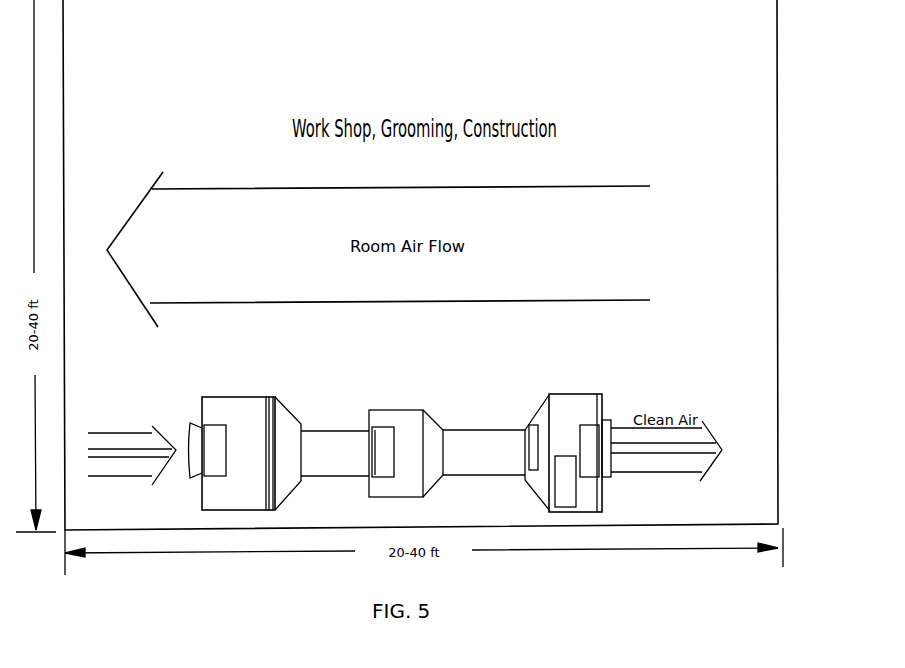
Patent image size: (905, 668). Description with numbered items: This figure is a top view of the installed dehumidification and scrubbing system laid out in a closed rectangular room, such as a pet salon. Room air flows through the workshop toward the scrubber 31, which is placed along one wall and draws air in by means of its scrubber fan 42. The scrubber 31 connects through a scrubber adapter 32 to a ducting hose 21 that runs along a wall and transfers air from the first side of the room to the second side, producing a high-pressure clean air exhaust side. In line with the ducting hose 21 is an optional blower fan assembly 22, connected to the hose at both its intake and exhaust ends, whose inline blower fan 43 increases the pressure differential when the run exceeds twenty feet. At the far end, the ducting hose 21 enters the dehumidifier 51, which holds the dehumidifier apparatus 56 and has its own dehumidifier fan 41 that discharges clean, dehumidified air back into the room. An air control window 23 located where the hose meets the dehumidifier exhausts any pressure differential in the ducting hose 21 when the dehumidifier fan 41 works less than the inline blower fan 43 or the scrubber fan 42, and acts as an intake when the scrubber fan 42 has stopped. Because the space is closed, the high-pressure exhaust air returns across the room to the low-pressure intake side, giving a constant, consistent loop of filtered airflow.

The ducting hose 21 is at (358, 436).
The blower fan assembly 22 is at (412, 418).
The air control window 23 is at (533, 437).
The scrubber 31 is at (247, 403).
The scrubber adapter 32 is at (283, 488).
The dehumidifier fan 41 is at (596, 400).
The scrubber fan 42 is at (215, 470).
The inline blower fan 43 is at (378, 475).
The dehumidifier 51 is at (588, 398).
The dehumidifier apparatus 56 is at (576, 487).